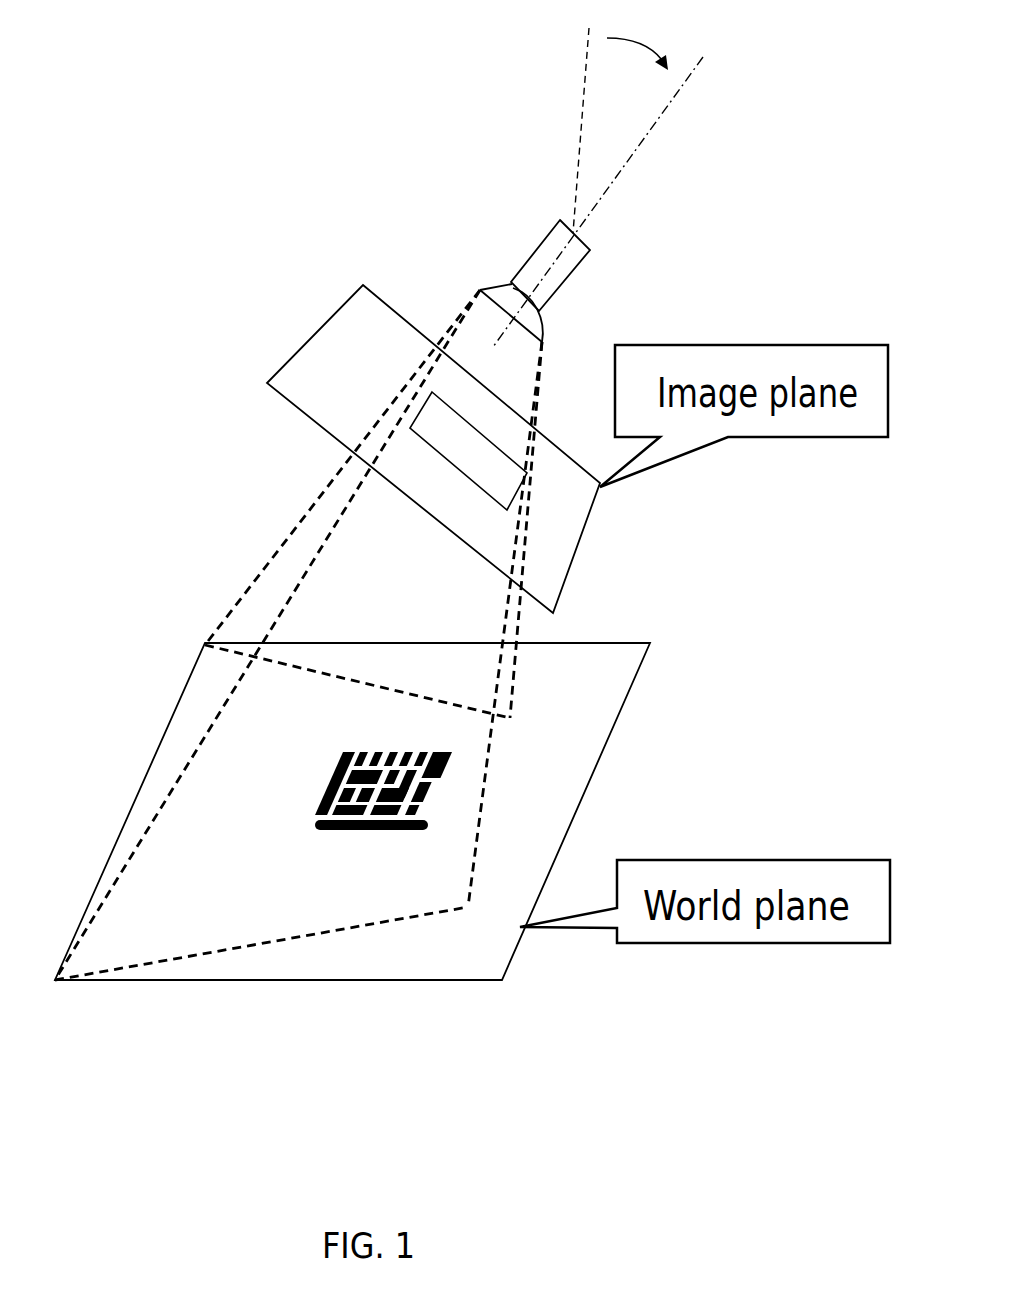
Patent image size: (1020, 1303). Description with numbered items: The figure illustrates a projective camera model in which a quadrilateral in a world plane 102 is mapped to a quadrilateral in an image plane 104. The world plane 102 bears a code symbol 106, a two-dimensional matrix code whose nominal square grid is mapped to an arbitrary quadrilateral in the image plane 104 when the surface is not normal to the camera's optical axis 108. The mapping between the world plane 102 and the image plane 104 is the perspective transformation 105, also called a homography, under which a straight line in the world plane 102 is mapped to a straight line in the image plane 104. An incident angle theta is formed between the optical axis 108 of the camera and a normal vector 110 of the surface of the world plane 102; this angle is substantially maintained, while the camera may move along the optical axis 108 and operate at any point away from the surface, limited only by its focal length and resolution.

The world plane 102 is at (632, 698).
The image plane 104 is at (580, 547).
The perspective transformation 105 is at (278, 543).
The code symbol 106 is at (330, 787).
The optical axis 108 is at (660, 120).
The normal vector 110 is at (590, 63).